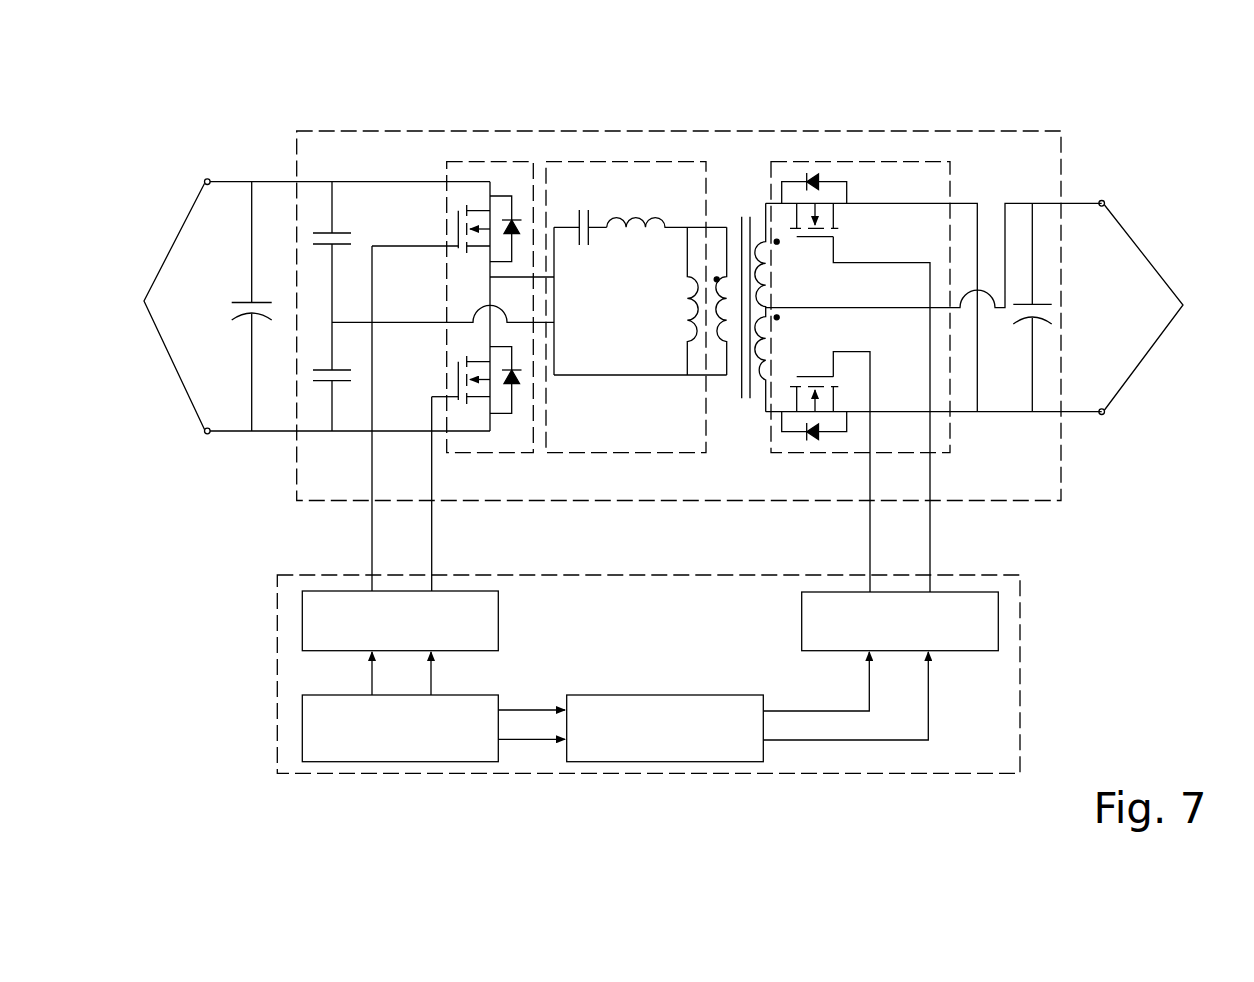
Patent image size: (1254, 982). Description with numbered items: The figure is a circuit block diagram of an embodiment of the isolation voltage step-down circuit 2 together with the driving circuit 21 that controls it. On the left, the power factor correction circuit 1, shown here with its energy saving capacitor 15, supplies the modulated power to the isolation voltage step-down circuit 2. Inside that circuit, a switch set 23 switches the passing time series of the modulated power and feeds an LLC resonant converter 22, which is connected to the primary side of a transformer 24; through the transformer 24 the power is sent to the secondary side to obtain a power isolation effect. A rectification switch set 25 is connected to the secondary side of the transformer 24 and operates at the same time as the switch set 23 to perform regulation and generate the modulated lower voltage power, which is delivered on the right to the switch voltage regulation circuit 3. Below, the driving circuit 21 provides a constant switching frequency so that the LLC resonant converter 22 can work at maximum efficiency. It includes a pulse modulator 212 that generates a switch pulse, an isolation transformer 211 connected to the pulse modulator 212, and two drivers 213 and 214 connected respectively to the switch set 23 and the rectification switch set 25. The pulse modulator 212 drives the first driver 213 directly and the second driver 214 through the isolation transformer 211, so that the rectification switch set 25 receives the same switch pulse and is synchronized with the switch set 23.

The power factor correction circuit 1 is at (309, 306).
The energy saving capacitor 15 is at (258, 297).
The isolation voltage step-down circuit 2 is at (577, 131).
The switch set 23 is at (488, 161).
The LLC resonant converter 22 is at (627, 455).
The transformer 24 is at (745, 412).
The rectification switch set 25 is at (815, 455).
The switch voltage regulation circuit 3 is at (1151, 308).
The driving circuit 21 is at (1020, 732).
The isolation transformer 211 is at (704, 764).
The pulse modulator 212 is at (302, 725).
The driver 213 is at (302, 622).
The driver 214 is at (998, 619).